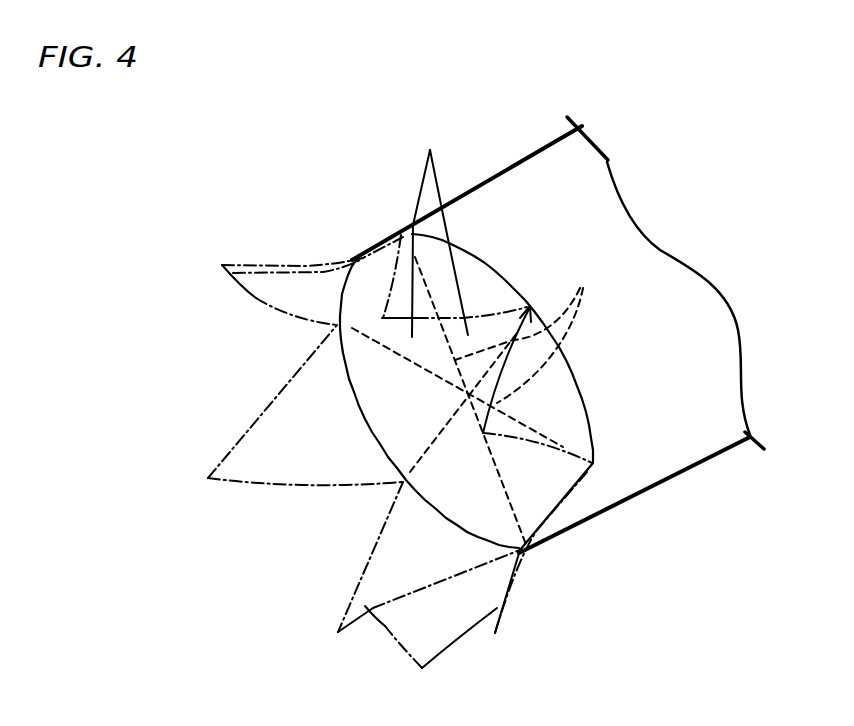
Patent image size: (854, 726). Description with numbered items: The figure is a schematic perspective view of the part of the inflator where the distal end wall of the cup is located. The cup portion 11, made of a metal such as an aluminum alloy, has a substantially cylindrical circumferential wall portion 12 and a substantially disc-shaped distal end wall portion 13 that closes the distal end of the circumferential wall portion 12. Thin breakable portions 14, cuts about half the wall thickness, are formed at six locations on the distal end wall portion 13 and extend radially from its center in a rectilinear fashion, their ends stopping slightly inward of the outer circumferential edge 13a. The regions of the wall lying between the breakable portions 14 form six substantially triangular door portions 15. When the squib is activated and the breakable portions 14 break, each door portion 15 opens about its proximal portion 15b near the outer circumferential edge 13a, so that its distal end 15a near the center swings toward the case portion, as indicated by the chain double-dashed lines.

The cup portion 11 is at (522, 141).
The circumferential wall portion 12 is at (583, 182).
The distal end wall portion 13 is at (387, 444).
The outer circumferential edge 13a is at (560, 373).
The breakable portions 14 is at (528, 329).
The door portions 15 is at (297, 262).
The distal ends 15a is at (503, 423).
The proximal portion 15b is at (347, 413).